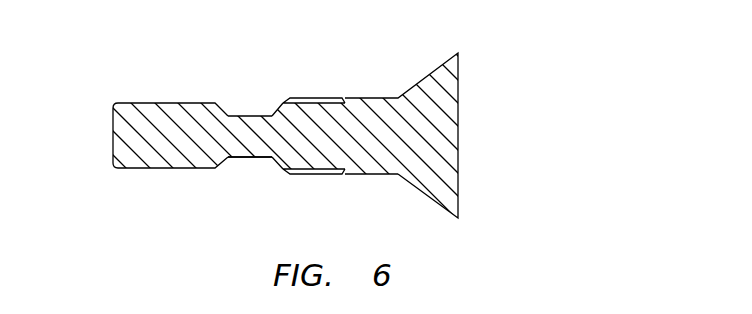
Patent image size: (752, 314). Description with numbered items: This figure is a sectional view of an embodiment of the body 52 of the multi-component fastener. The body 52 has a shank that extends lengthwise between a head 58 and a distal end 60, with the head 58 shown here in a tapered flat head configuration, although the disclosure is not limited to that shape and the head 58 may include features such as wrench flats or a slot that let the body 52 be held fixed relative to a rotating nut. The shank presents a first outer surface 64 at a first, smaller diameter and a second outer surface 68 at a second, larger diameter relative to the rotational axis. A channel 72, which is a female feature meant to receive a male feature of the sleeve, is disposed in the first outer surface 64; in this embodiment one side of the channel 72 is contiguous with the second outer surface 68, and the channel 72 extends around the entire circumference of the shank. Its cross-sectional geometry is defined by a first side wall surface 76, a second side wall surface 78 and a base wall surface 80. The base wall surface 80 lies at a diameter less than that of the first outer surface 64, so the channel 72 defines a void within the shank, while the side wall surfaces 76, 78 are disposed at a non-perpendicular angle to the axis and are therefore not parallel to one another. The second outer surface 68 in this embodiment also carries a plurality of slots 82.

The body 52 is at (542, 121).
The head 58 is at (460, 97).
The distal end 60 is at (113, 142).
The first outer surface 64 is at (160, 169).
The second outer surface 68 is at (358, 175).
The channel 72 is at (250, 94).
The first side wall surface 76 is at (223, 104).
The second side wall surface 78 is at (280, 100).
The base wall surface 80 is at (248, 158).
The slot 82 is at (325, 97).